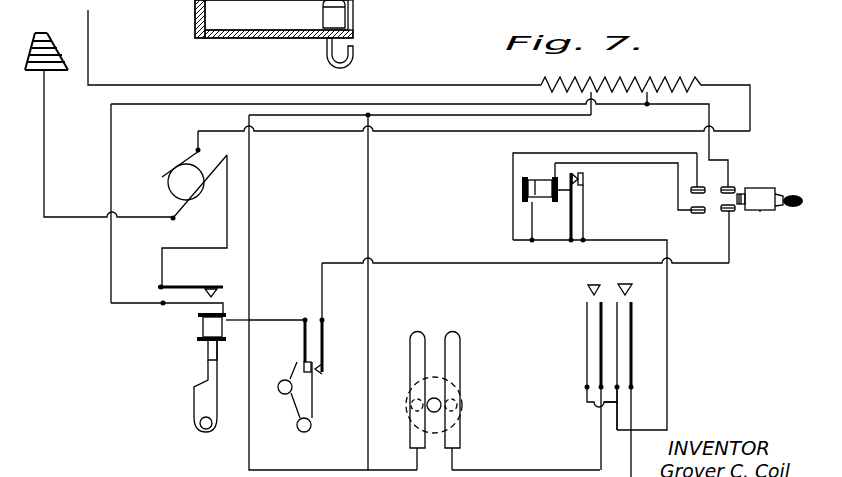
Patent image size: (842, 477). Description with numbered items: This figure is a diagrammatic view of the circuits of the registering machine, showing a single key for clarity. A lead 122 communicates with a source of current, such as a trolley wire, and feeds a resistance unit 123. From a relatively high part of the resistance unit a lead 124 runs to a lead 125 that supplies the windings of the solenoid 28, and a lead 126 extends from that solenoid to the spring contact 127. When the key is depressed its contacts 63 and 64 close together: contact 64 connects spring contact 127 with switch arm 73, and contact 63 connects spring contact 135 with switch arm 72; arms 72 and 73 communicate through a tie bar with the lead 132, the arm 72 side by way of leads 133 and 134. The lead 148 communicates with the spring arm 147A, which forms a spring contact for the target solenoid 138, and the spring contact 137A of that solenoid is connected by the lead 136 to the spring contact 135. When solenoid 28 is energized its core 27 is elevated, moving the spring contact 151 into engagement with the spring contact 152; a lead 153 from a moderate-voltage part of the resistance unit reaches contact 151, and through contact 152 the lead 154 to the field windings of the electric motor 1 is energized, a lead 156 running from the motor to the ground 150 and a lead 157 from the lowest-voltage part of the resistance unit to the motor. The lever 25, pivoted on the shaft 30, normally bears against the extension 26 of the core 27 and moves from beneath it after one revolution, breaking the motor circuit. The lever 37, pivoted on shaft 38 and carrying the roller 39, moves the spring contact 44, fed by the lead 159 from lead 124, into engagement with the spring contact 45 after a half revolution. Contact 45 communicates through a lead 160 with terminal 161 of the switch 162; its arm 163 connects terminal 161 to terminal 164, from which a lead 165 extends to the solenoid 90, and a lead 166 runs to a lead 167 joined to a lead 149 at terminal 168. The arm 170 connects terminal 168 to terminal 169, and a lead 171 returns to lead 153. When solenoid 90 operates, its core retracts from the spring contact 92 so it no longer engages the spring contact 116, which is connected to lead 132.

The electric motor 1 is at (168, 190).
The lever 25 is at (195, 405).
The extension 26 is at (207, 348).
The core 27 is at (197, 309).
The solenoid 28 is at (201, 334).
The shaft 30 is at (206, 429).
The lever 37 is at (313, 412).
The shaft 38 is at (307, 433).
The roller 39 is at (284, 395).
The spring contact 44 is at (302, 351).
The spring contact 45 is at (325, 352).
The contact 63 is at (588, 285).
The contact 64 is at (627, 290).
The switch arm 72 is at (587, 314).
The switch arm 73 is at (617, 322).
The solenoid 90 is at (535, 186).
The spring contact 92 is at (575, 232).
The spring contact 116 is at (587, 212).
The lead 122 is at (436, 72).
The resistance unit 123 is at (645, 92).
The lead 124 is at (573, 116).
The lead 125 is at (247, 323).
The lead 126 is at (249, 395).
The spring contact 127 is at (633, 354).
The lead 132 is at (620, 395).
The lead 133 is at (592, 407).
The lead 134 is at (585, 394).
The spring contact 135 is at (600, 338).
The lead 136 is at (517, 457).
The spring contact 137A is at (459, 343).
The solenoid 138 is at (462, 404).
The spring arm 147A is at (412, 341).
The lead 148 is at (369, 300).
The lead 149 is at (512, 188).
The ground 150 is at (40, 32).
The spring contact 151 is at (160, 305).
The spring contact 152 is at (201, 278).
The lead 153 is at (110, 174).
The lead 154 is at (208, 248).
The lead 156 is at (45, 157).
The lead 157 is at (463, 138).
The lead 159 is at (282, 319).
The lead 160 is at (345, 262).
The terminal 161 is at (732, 213).
The switch 162 is at (790, 193).
The arm 163 is at (766, 212).
The terminal 164 is at (699, 214).
The lead 165 is at (676, 192).
The lead 166 is at (534, 203).
The lead 167 is at (522, 241).
The terminal 168 is at (690, 190).
The terminal 169 is at (728, 160).
The arm 170 is at (756, 187).
The lead 171 is at (732, 168).